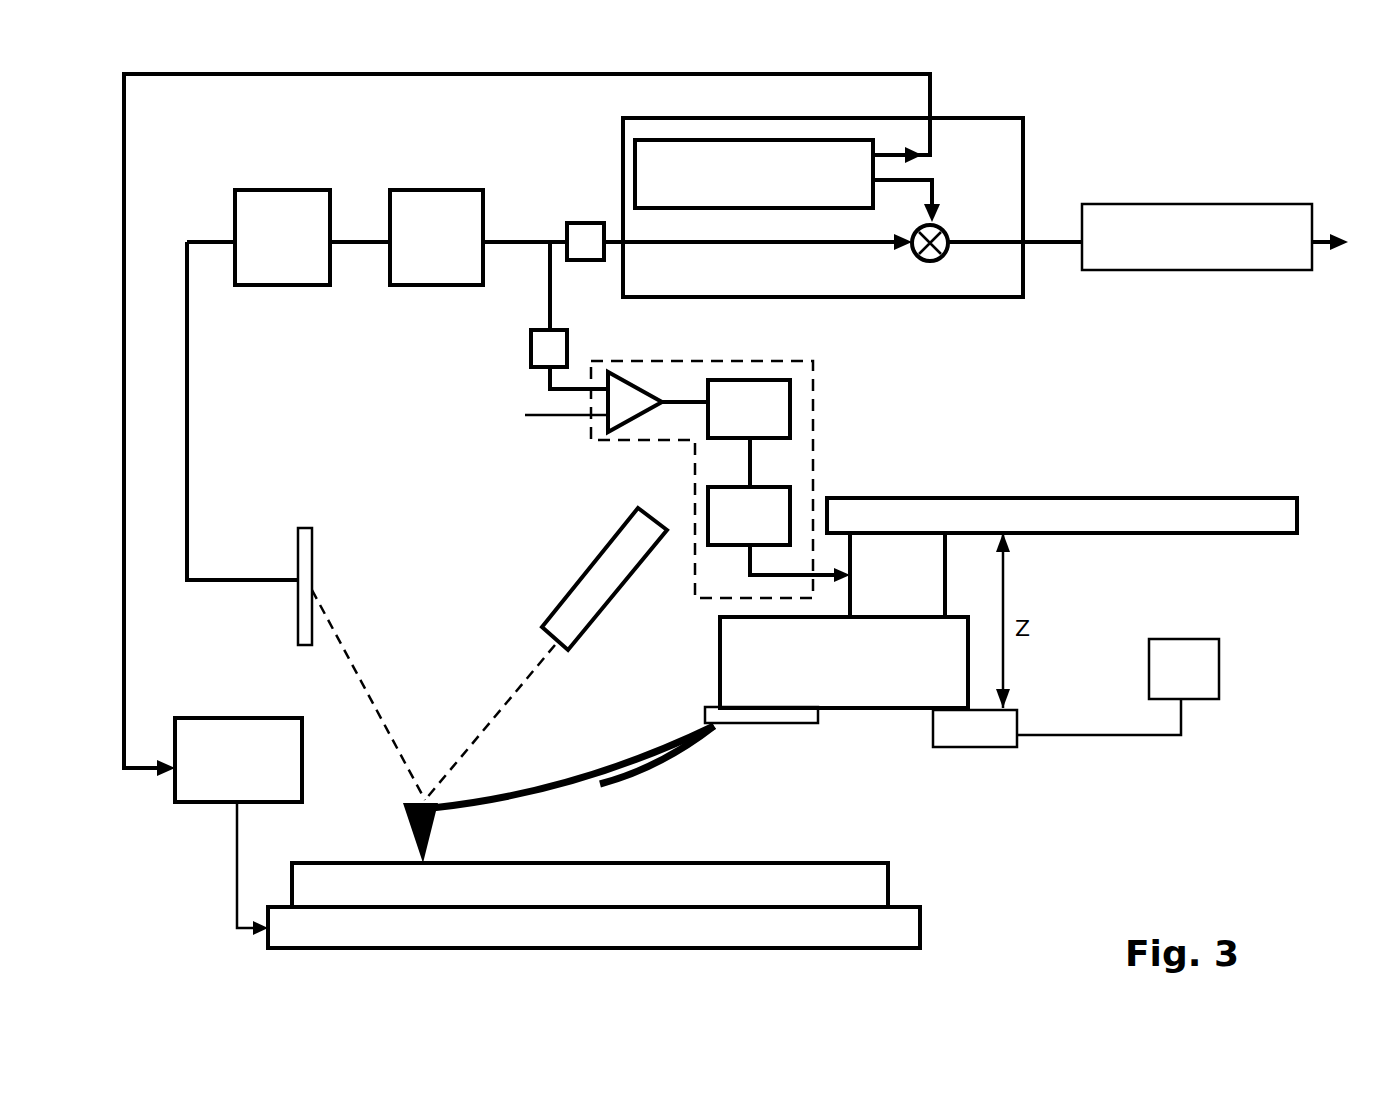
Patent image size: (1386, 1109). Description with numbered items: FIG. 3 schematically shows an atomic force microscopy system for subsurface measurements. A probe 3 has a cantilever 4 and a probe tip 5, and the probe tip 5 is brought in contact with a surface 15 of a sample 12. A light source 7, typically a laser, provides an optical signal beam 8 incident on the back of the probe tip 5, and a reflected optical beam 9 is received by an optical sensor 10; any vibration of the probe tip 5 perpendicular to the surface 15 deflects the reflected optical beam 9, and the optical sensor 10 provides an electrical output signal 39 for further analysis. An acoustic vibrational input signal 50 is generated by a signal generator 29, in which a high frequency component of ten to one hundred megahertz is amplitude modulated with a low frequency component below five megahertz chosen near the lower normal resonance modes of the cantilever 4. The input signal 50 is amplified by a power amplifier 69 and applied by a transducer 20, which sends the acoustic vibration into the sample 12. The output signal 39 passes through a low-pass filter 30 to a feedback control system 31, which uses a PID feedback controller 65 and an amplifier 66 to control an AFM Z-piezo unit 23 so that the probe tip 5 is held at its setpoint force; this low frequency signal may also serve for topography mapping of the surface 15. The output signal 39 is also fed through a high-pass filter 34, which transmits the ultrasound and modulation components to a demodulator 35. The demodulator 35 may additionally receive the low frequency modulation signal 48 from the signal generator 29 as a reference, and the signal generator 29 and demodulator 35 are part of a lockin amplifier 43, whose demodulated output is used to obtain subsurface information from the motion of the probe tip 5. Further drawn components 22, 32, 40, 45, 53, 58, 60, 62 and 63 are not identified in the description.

The probe 3 is at (680, 745).
The cantilever 4 is at (617, 751).
The probe tip 5 is at (413, 842).
The light source 7 is at (612, 542).
The optical signal beam 8 is at (521, 679).
The reflected optical beam 9 is at (367, 692).
The optical sensor 10 is at (317, 530).
The sample 12 is at (890, 885).
The surface 15 is at (633, 863).
The transducer 20 is at (910, 925).
The scan head 22 is at (878, 708).
The AFM Z-piezo unit 23 is at (897, 575).
The signal generator 29 is at (680, 140).
The low-pass filter 30 is at (531, 356).
The feedback control system 31 is at (732, 361).
The piezo controller 32 is at (1205, 699).
The high-pass filter 34 is at (590, 222).
The demodulator 35 is at (932, 262).
The output signal 39 is at (273, 578).
The atomic force microscope system 40 is at (1142, 766).
The lockin amplifier 43 is at (965, 298).
The subsurface signals output 45 is at (1140, 271).
The signal 48 is at (934, 203).
The acoustic vibrational input signal 50 is at (900, 77).
The z-position sensor 53 is at (1018, 715).
The pre-amplifier 58 is at (286, 190).
The demodulator 60 is at (444, 190).
The setpoint input 62 is at (540, 422).
The comparator 63 is at (633, 382).
The PID feedback controller 65 is at (792, 414).
The amplifier 66 is at (792, 487).
The power amplifier 69 is at (230, 718).